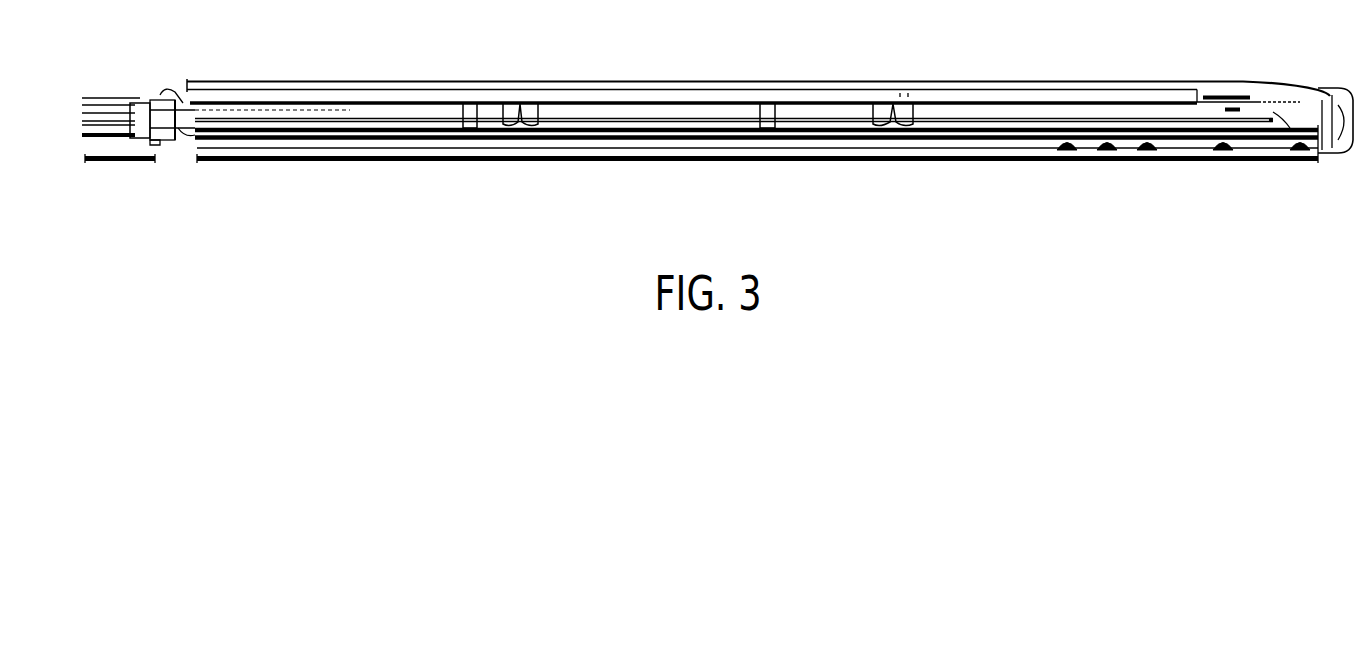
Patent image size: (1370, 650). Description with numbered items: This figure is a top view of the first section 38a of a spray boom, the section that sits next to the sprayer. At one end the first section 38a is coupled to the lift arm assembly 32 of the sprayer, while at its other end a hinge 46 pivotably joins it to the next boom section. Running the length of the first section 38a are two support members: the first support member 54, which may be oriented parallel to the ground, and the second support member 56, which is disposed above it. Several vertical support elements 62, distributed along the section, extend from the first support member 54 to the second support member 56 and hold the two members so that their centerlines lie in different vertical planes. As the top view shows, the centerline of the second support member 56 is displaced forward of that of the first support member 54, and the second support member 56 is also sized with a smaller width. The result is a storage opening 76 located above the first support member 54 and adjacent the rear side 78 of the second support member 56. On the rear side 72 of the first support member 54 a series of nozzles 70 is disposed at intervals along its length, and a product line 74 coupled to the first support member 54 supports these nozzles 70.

The lift arm assembly 32 is at (1328, 85).
The first section 38a is at (930, 82).
The hinge 46 is at (184, 125).
The first support member 54 is at (594, 102).
The second support member 56 is at (697, 95).
The vertical support elements 62 is at (523, 100).
The nozzles 70 is at (1074, 150).
The rear side 72 is at (975, 140).
The product line 74 is at (792, 162).
The storage opening 76 is at (377, 115).
The rear side 78 is at (278, 108).